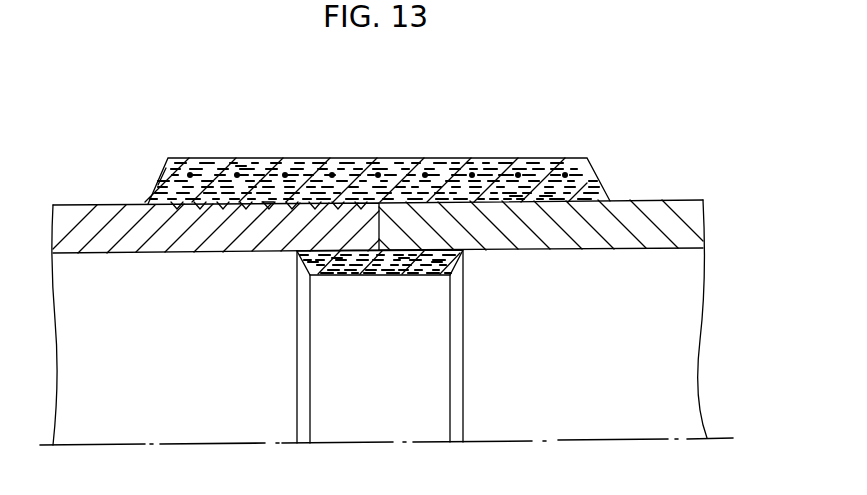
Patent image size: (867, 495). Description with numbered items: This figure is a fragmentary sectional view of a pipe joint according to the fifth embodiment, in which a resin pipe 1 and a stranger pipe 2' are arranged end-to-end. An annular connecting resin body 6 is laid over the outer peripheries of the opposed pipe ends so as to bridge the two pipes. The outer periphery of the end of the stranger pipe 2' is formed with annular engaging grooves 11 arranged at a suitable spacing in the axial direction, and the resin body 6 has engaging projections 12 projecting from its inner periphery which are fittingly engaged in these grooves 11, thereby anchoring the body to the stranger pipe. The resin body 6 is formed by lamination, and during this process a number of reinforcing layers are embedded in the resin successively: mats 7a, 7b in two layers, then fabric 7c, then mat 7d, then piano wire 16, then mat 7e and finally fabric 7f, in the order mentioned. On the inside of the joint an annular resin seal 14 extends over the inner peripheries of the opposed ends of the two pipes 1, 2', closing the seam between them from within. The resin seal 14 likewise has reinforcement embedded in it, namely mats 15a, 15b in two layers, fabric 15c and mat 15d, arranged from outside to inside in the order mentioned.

The resin pipe 1 is at (657, 220).
The stranger pipe 2' is at (215, 324).
The annular connecting resin body 6 is at (355, 165).
The mat 7a is at (518, 196).
The mat 7b is at (545, 196).
The fabric 7c is at (302, 165).
The mat 7d is at (398, 167).
The mat 7e is at (453, 168).
The fabric 7f is at (510, 165).
The annular engaging grooves 11 is at (226, 210).
The engaging projections 12 is at (163, 168).
The annular resin seal 14 is at (383, 265).
The mat 15a is at (337, 258).
The mat 15b is at (437, 262).
The fabric 15c is at (404, 258).
The mat 15d is at (312, 262).
The piano wire 16 is at (241, 165).